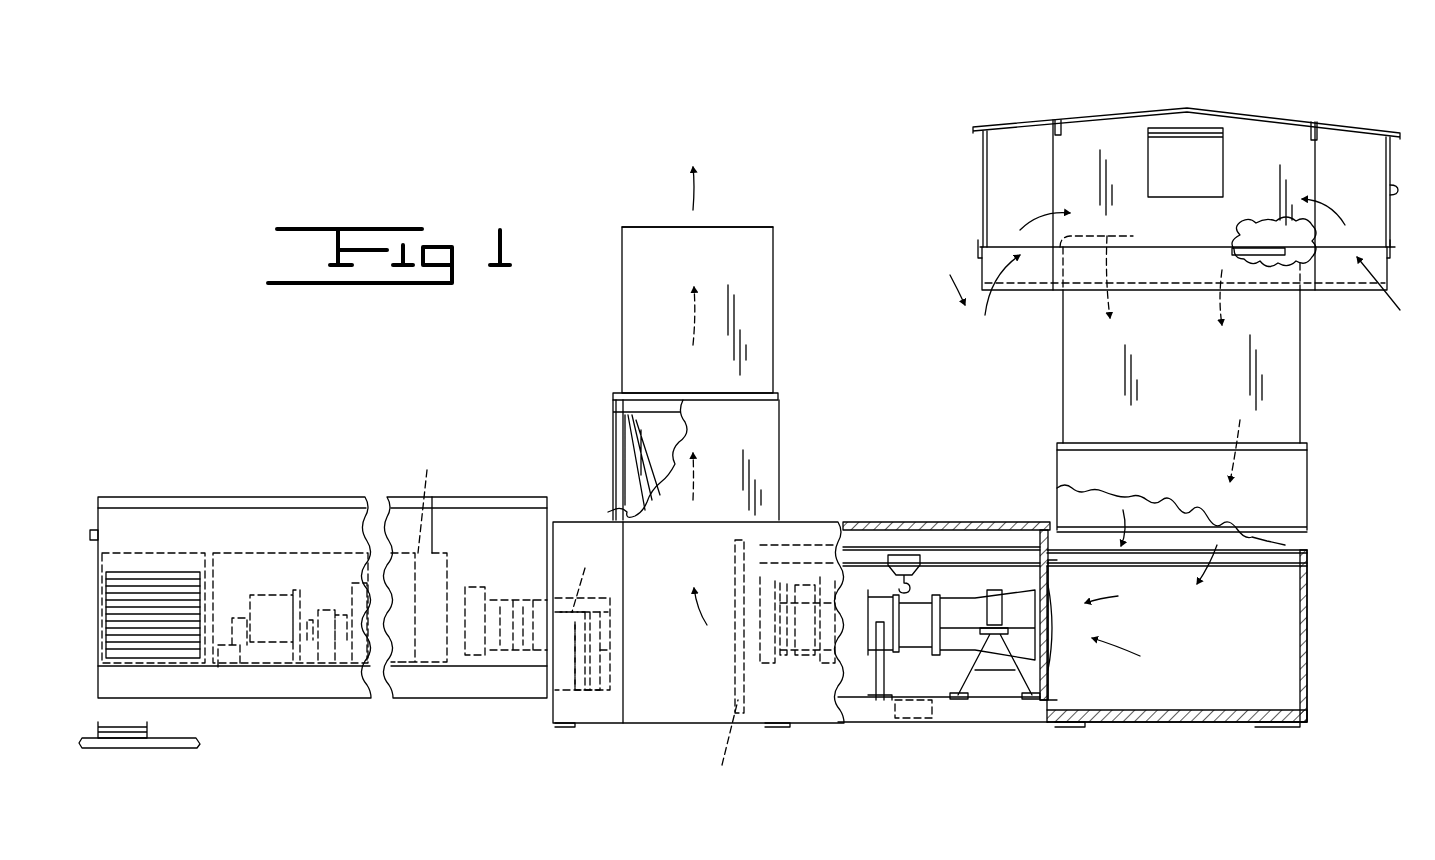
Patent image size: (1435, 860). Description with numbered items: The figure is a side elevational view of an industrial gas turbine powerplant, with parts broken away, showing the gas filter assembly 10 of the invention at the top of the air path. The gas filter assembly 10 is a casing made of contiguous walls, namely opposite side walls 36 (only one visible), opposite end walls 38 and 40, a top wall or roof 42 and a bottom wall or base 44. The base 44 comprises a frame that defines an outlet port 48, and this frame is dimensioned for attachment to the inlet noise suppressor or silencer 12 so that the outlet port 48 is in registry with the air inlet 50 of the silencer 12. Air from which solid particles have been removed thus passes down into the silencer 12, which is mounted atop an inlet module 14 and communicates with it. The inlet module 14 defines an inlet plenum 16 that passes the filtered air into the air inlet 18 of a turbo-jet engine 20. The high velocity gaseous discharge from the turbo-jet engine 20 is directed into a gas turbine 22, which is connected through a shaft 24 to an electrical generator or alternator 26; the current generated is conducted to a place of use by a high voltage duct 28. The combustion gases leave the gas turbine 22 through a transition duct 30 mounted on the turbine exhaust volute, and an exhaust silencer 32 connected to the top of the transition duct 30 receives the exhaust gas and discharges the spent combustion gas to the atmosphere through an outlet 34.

The gas filter assembly 10 is at (986, 108).
The inlet noise suppressor or silencer 12 is at (1305, 392).
The inlet module 14 is at (1305, 502).
The inlet plenum 16 is at (1210, 649).
The air inlet 18 is at (1055, 636).
The turbo-jet engine 20 is at (955, 594).
The gas turbine 22 is at (698, 657).
The shaft 24 is at (579, 617).
The electrical generator or alternator 26 is at (465, 572).
The high voltage duct 28 is at (95, 530).
The transition duct 30 is at (620, 440).
The exhaust silencer 32 is at (633, 295).
The outlet 34 is at (760, 227).
The side walls 36 is at (1272, 147).
The end wall 38 is at (983, 170).
The end wall 40 is at (1395, 188).
The top wall or roof 42 is at (1187, 108).
The bottom wall or base 44 is at (1133, 236).
The outlet port 48 is at (1240, 235).
The air inlet 50 is at (1275, 265).